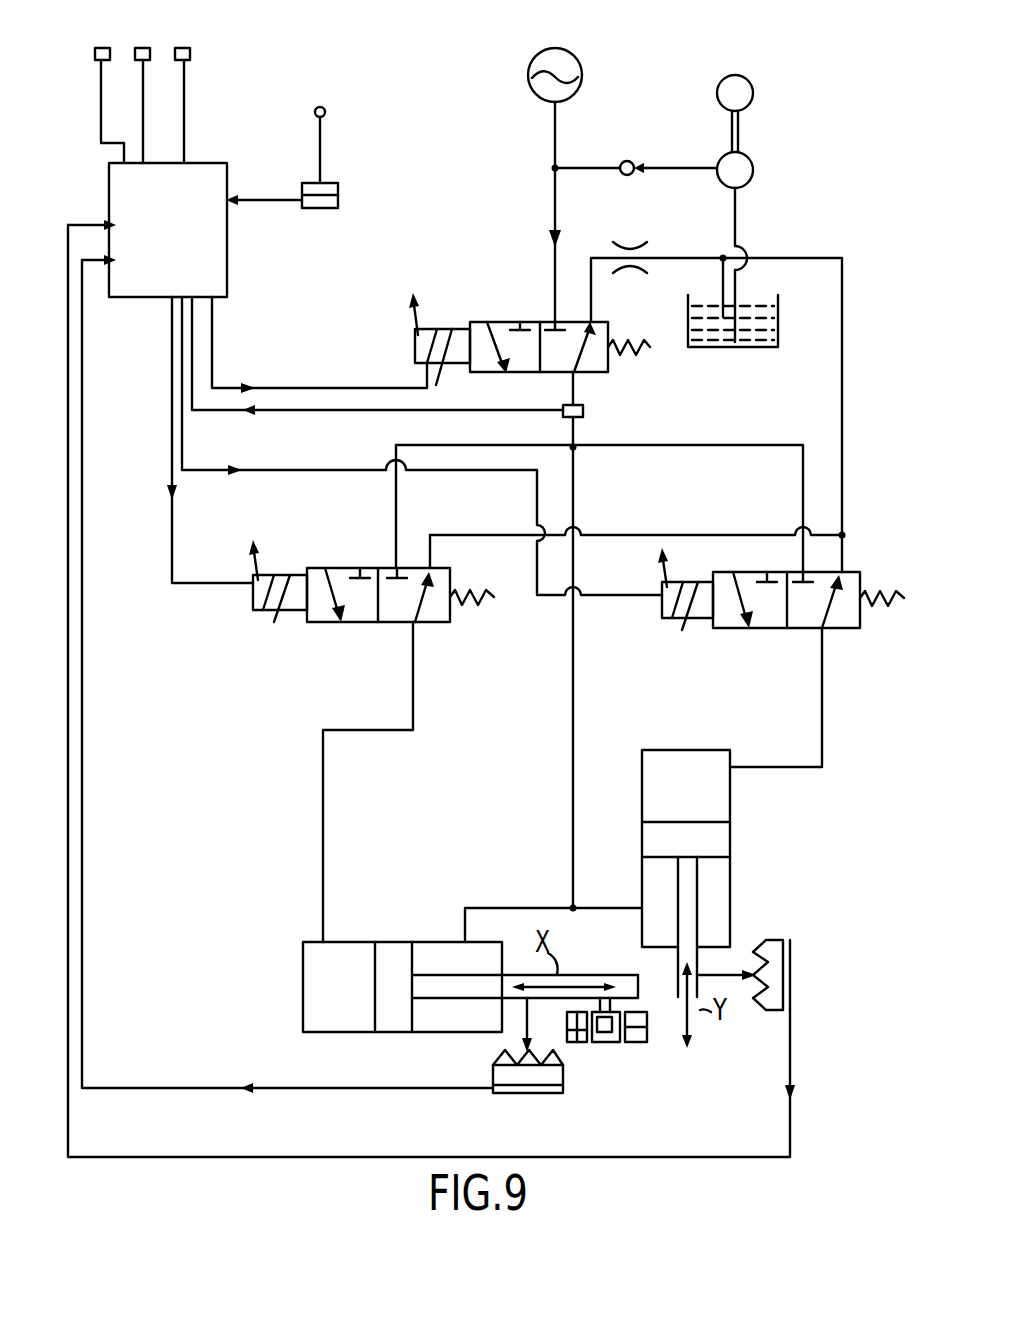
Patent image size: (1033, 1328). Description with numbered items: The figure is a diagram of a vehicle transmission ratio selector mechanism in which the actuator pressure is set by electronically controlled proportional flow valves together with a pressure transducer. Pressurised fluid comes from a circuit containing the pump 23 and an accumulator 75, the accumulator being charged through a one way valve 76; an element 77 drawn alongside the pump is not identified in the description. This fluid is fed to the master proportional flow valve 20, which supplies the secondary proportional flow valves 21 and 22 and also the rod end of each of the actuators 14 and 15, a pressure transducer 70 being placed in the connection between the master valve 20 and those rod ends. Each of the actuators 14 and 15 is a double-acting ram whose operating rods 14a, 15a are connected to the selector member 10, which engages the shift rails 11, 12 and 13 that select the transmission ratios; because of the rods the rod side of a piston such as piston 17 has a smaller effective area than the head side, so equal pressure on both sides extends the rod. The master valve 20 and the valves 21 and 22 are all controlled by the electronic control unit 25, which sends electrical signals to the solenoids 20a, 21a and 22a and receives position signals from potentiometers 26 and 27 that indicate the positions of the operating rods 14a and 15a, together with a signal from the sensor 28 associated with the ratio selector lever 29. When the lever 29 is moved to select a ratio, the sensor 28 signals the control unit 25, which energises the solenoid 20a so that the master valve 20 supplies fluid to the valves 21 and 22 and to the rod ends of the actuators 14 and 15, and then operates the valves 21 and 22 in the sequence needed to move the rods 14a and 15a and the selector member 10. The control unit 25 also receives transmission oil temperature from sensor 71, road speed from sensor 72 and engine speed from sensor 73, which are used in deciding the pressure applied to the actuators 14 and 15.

The selector member 10 is at (617, 1030).
The shift rail 11 is at (580, 1045).
The shift rail 12 is at (606, 1045).
The shift rail 13 is at (640, 1030).
The actuator 14 is at (351, 965).
The operating rod 14a is at (620, 976).
The actuator 15 is at (712, 775).
The operating rod 15a is at (690, 897).
The piston 17 is at (731, 838).
The master proportional flow valve 20 is at (508, 330).
The solenoid 20a is at (452, 333).
The secondary proportional flow valve 21 is at (342, 568).
The solenoid 21a is at (285, 578).
The secondary proportional flow valve 22 is at (840, 632).
The solenoid 22a is at (700, 584).
The pump 23 is at (752, 163).
The electronic control unit 25 is at (431, 660).
The potentiometer 26 is at (527, 1090).
The potentiometer 27 is at (792, 985).
The sensor 28 is at (340, 202).
The ratio selector lever 29 is at (322, 128).
The pressure transducer 70 is at (585, 410).
The sensor 71 is at (178, 50).
The sensor 72 is at (141, 50).
The sensor 73 is at (100, 50).
The accumulator 75 is at (537, 63).
The one way valve 76 is at (637, 163).
The motor 77 is at (750, 86).